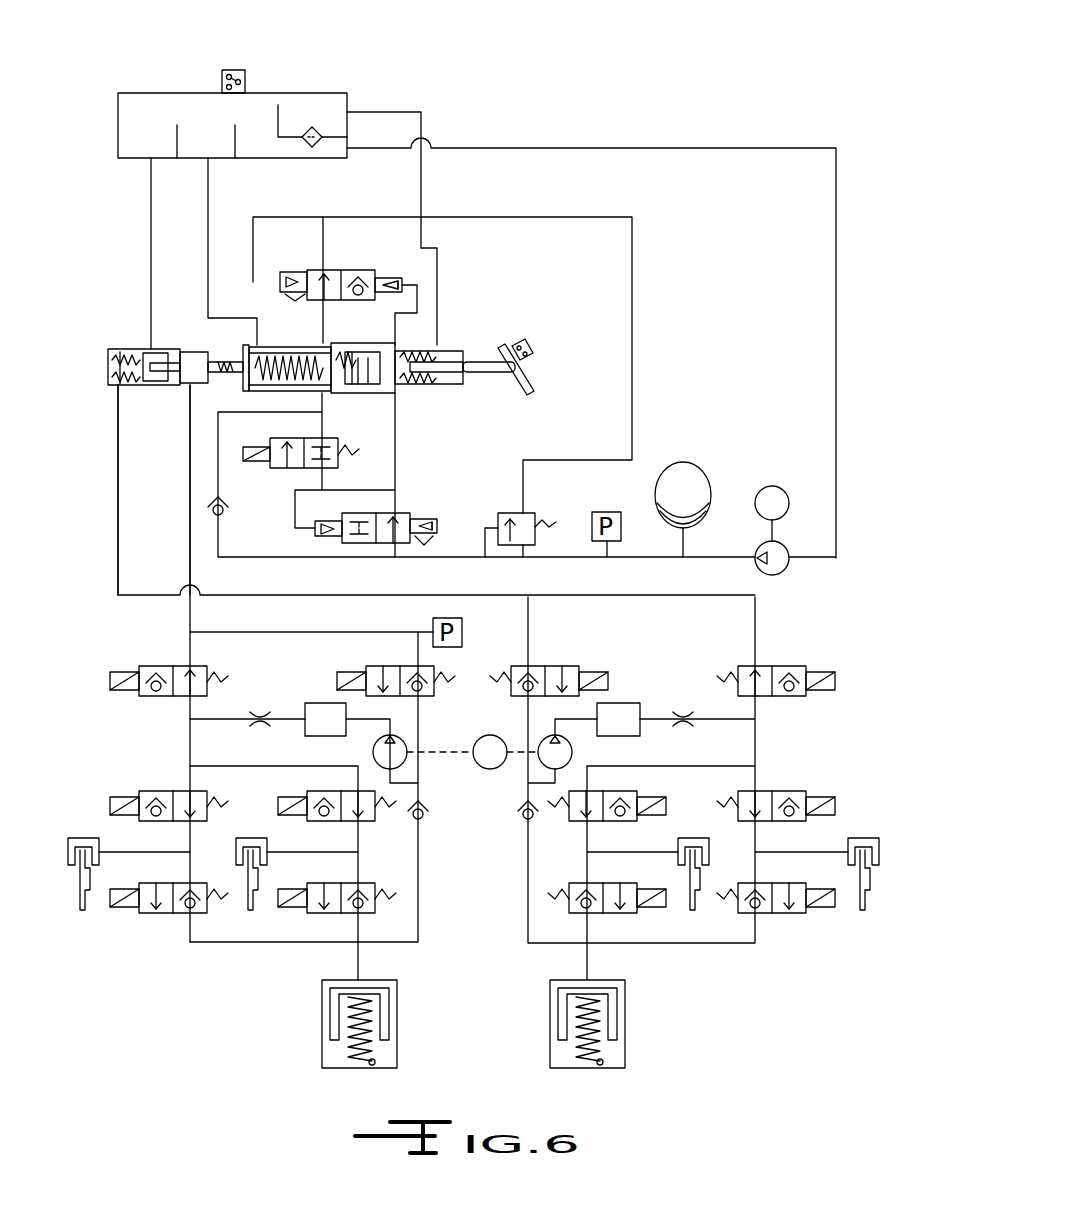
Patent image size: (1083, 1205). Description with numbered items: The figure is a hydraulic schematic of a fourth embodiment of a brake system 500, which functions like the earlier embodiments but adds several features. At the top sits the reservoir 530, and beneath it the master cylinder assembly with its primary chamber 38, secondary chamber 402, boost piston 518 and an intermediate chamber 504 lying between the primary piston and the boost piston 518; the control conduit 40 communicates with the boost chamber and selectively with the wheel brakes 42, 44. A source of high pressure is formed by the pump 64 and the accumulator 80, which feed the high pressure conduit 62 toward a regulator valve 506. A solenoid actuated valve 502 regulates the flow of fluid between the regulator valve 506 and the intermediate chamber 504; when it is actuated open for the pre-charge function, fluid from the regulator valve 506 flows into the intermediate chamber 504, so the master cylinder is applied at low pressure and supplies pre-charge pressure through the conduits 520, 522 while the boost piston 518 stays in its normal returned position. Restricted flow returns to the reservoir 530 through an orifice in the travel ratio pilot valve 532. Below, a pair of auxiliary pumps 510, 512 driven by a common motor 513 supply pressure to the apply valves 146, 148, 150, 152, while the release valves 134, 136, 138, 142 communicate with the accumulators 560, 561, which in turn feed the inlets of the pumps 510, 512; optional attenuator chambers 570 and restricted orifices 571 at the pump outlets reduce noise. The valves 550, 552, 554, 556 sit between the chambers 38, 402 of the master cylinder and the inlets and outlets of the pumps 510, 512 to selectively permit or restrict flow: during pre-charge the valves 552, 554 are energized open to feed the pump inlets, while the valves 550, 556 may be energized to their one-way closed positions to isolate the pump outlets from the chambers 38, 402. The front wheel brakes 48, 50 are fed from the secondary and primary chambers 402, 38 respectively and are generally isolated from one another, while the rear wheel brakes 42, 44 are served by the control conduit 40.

The brake system 500 is at (672, 90).
The reservoir 530 is at (178, 93).
The travel ratio pilot valve 532 is at (340, 270).
The boost piston 518 is at (388, 355).
The secondary chamber 402 is at (112, 388).
The primary chamber 38 is at (222, 384).
The intermediate chamber 504 is at (350, 393).
The control conduit 40 is at (398, 420).
The conduit 520 is at (120, 486).
The solenoid actuated valve 502 is at (307, 468).
The conduit 522 is at (189, 528).
The regulator valve 506 is at (378, 545).
The high pressure conduit 62 is at (447, 557).
The accumulator 80 is at (701, 464).
The pump 64 is at (780, 574).
The valve 550 is at (170, 666).
The valve 552 is at (400, 666).
The valve 554 is at (545, 666).
The valve 556 is at (770, 666).
The attenuator chamber 570 is at (318, 703).
The restricted orifice 571 is at (262, 728).
The auxiliary pump 510 is at (400, 737).
The auxiliary pump 512 is at (572, 762).
The common motor 513 is at (488, 770).
The release valve 134 is at (175, 791).
The release valve 136 is at (338, 791).
The release valve 138 is at (605, 793).
The release valve 142 is at (775, 791).
The wheel brake 44 is at (847, 870).
The wheel brake 42 is at (700, 848).
The apply valve 146 is at (175, 915).
The apply valve 148 is at (342, 915).
The apply valve 150 is at (608, 915).
The apply valve 152 is at (795, 915).
The wheel brake 48 is at (70, 855).
The wheel brake 50 is at (230, 855).
The accumulator 560 is at (322, 990).
The accumulator 561 is at (625, 990).